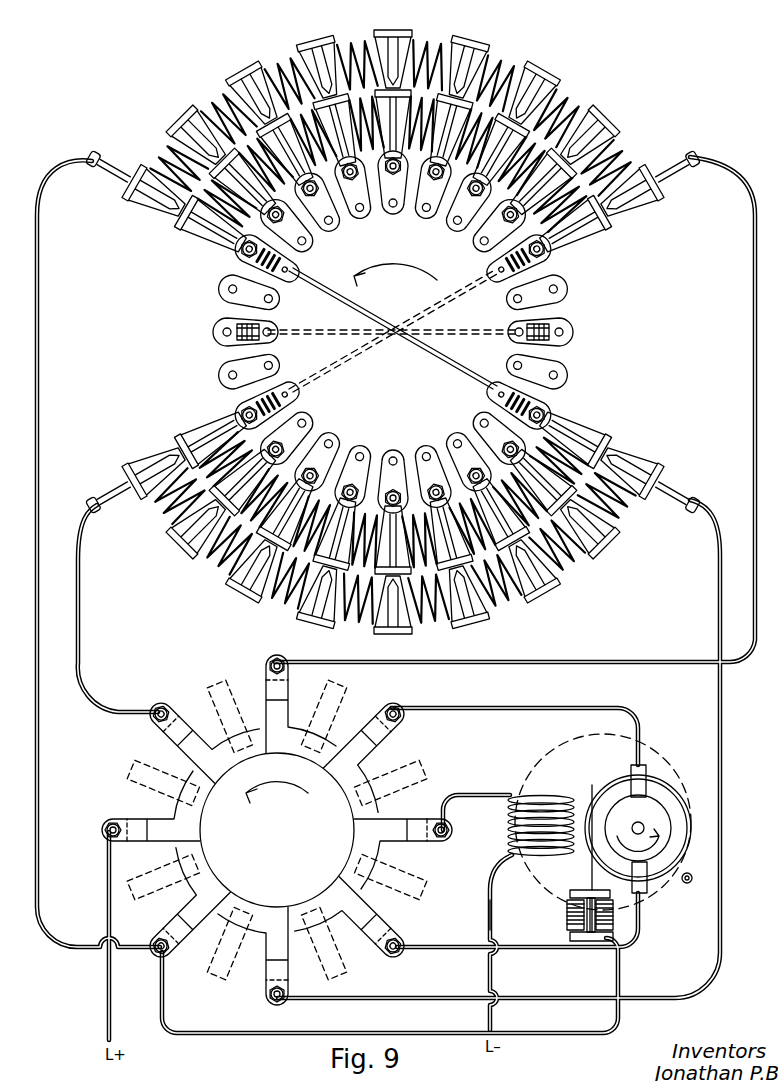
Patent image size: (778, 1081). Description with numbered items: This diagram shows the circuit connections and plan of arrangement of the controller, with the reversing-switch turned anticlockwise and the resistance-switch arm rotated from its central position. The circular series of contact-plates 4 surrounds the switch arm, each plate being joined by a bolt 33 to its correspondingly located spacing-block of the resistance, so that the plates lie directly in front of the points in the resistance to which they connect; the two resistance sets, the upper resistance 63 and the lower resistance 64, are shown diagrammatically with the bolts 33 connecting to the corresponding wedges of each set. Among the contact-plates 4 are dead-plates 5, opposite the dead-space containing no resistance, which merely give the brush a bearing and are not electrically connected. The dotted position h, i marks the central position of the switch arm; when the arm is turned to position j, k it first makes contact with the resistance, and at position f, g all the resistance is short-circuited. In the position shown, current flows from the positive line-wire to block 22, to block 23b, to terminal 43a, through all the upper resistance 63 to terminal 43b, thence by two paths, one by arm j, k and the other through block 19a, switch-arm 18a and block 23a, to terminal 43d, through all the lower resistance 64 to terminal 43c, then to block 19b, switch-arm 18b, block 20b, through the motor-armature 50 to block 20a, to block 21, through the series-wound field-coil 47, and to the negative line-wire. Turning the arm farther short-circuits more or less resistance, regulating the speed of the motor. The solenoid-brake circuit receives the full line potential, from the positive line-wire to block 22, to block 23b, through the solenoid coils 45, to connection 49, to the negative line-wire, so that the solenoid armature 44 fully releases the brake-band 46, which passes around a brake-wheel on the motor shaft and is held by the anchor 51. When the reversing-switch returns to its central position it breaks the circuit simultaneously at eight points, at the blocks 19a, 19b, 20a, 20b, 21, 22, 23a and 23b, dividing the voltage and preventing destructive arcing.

The contact-plate 4 is at (412, 224).
The dead-plate 5 is at (224, 356).
The bolt 33 is at (378, 28).
The upper resistance 63 is at (500, 60).
The lower resistance 64 is at (240, 577).
The resistance terminal 43a is at (109, 174).
The resistance terminal 43b is at (662, 172).
The resistance terminal 43c is at (677, 497).
The resistance terminal 43d is at (135, 486).
The switch-arm position f is at (268, 259).
The switch-arm position g is at (518, 404).
The switch-arm central position h is at (253, 330).
The switch-arm central position i is at (538, 329).
The switch-arm position j is at (267, 404).
The switch-arm position k is at (517, 259).
The switch-arm 18a is at (277, 823).
The switch-arm 18b is at (277, 830).
The terminal block 19a is at (300, 697).
The terminal block 19b is at (259, 966).
The terminal block 20a is at (383, 751).
The terminal block 20b is at (355, 936).
The terminal block 21 is at (414, 854).
The terminal block 22 is at (135, 806).
The terminal block 23a is at (204, 724).
The terminal block 23b is at (171, 912).
The solenoid armature 44 is at (570, 894).
The solenoid-brake coils 45 is at (567, 916).
The brake-band 46 is at (574, 867).
The series-wound field-coil 47 is at (541, 816).
The solenoid-circuit connection 49 is at (488, 928).
The motor-armature 50 is at (638, 829).
The brake-band anchor 51 is at (689, 882).